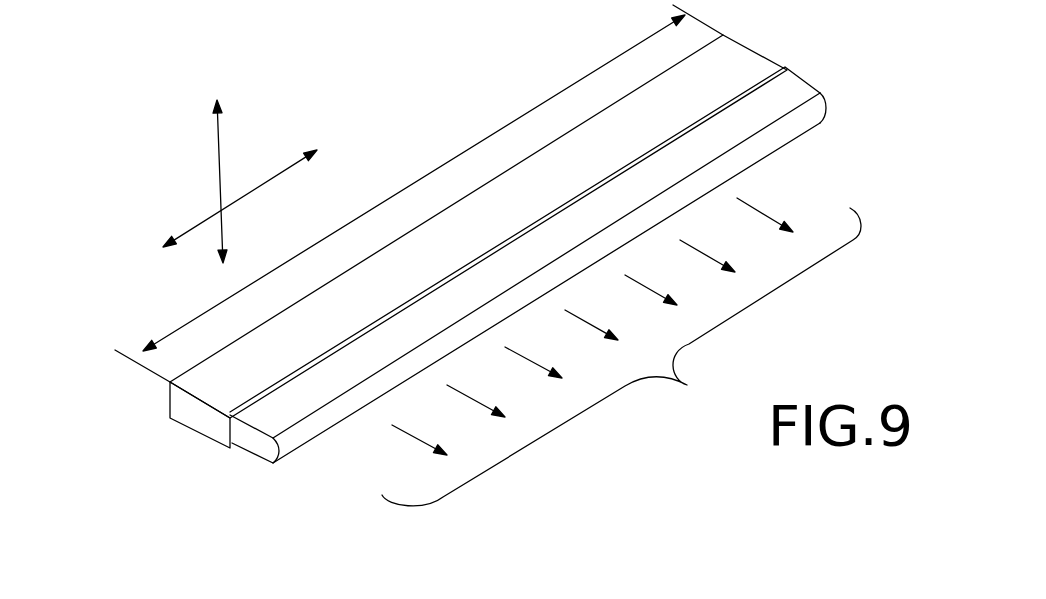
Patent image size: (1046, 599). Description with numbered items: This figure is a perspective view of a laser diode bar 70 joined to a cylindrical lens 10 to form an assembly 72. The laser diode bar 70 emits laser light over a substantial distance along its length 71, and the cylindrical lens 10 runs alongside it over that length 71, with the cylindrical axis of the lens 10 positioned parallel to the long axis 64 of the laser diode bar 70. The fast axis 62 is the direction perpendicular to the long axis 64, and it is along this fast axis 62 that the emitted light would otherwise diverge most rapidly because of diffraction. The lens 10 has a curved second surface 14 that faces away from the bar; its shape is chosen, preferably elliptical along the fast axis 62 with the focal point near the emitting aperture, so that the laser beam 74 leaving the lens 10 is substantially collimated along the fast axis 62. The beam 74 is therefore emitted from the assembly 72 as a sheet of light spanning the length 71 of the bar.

The cylindrical lens 10 is at (793, 98).
The curved second surface 14 is at (797, 125).
The fast axis 62 is at (220, 152).
The long axis 64 is at (278, 180).
The laser diode bar 70 is at (737, 72).
The length 71 is at (522, 113).
The assembly 72 is at (185, 455).
The laser beam 74 is at (621, 352).